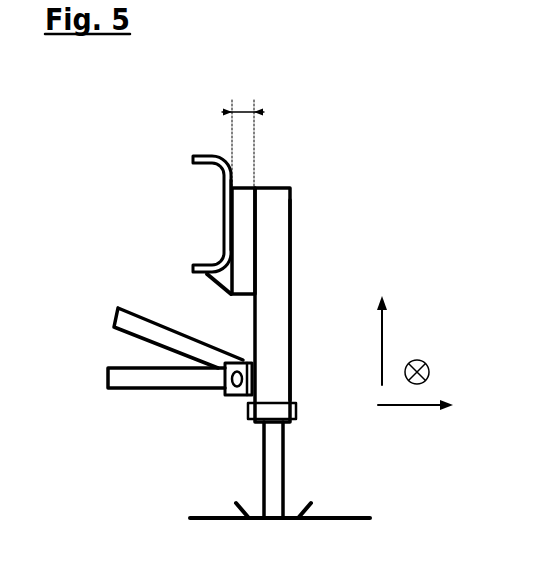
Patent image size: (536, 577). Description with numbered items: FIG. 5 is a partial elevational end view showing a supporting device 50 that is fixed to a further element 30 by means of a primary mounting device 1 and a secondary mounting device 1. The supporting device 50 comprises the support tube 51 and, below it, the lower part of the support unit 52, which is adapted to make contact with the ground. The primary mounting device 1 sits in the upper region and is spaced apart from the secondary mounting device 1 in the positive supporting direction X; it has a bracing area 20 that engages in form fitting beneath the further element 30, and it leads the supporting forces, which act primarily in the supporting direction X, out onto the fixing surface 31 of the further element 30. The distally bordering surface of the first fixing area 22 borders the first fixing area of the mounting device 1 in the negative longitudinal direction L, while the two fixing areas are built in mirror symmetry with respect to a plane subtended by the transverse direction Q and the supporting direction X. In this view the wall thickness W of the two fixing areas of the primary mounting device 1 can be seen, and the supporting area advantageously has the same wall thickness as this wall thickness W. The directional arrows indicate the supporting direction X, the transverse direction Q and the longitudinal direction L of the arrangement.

The mounting device 1 is at (259, 176).
The bracing area 20 is at (217, 285).
The distally bordering surface of the first fixing area 22 is at (243, 270).
The further element 30 is at (201, 147).
The fixing surface 31 is at (230, 210).
The supporting device 50 is at (289, 172).
The support tube 51 is at (273, 247).
The lower part of the support unit 52 is at (275, 468).
The wall thickness W is at (245, 111).
The supporting direction X is at (382, 347).
The transverse direction Q is at (413, 407).
The longitudinal direction L is at (429, 372).